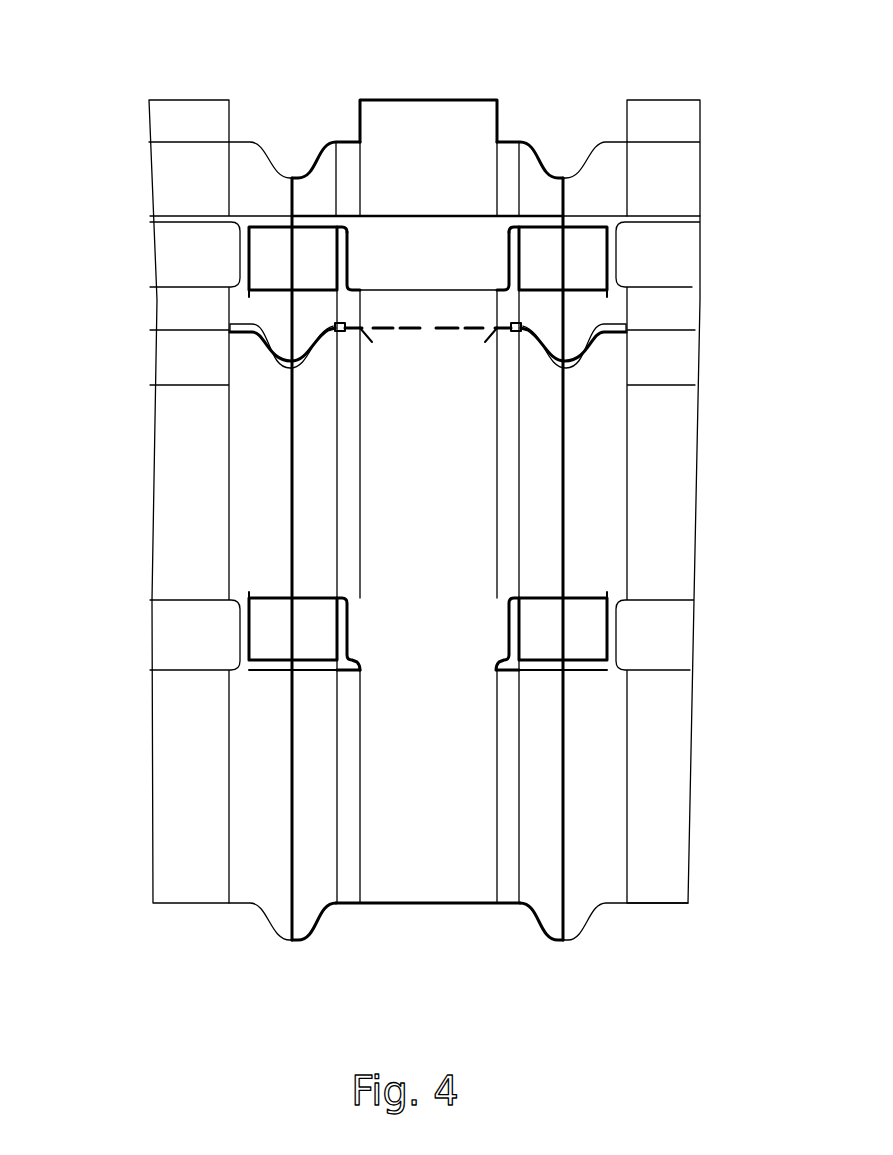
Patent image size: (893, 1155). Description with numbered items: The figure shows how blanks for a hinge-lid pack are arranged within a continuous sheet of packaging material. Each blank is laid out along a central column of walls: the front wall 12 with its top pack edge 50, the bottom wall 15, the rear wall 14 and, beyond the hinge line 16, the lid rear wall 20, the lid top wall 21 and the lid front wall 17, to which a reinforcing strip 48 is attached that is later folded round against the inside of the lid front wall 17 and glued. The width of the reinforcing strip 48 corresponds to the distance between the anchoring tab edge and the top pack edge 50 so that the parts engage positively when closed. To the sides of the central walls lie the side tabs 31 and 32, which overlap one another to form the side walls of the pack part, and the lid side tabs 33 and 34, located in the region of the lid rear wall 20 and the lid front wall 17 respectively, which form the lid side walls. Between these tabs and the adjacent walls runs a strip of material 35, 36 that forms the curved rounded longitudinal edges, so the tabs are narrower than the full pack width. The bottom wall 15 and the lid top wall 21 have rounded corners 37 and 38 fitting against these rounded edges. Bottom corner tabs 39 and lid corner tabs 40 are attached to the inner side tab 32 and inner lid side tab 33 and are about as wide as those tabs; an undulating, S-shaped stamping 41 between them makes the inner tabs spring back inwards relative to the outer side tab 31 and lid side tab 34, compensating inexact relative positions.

The front wall 12 is at (437, 781).
The rear wall 14 is at (437, 525).
The bottom wall 15 is at (437, 652).
The hinge line 16 is at (432, 330).
The lid front wall 17 is at (412, 199).
The lid rear wall 20 is at (442, 320).
The lid top wall 21 is at (417, 270).
The side tab 31 is at (326, 896).
The side tab 32 is at (312, 527).
The lid side tab 33 is at (303, 320).
The lid side tab 34 is at (310, 183).
The strip of material 35 is at (347, 156).
The strip of material 36 is at (507, 157).
The rounded corner 37 is at (360, 666).
The rounded corner 38 is at (487, 227).
The bottom corner tab 39 is at (307, 633).
The lid corner tab 40 is at (307, 258).
The stamping 41 is at (313, 341).
The reinforcing strip 48 is at (381, 116).
The top pack edge 50 is at (420, 906).